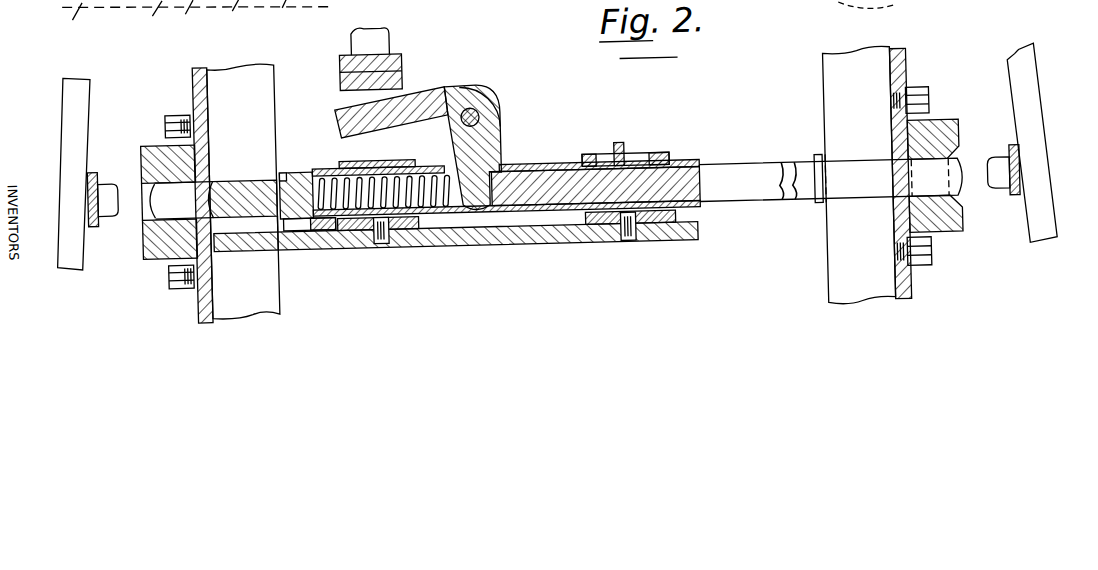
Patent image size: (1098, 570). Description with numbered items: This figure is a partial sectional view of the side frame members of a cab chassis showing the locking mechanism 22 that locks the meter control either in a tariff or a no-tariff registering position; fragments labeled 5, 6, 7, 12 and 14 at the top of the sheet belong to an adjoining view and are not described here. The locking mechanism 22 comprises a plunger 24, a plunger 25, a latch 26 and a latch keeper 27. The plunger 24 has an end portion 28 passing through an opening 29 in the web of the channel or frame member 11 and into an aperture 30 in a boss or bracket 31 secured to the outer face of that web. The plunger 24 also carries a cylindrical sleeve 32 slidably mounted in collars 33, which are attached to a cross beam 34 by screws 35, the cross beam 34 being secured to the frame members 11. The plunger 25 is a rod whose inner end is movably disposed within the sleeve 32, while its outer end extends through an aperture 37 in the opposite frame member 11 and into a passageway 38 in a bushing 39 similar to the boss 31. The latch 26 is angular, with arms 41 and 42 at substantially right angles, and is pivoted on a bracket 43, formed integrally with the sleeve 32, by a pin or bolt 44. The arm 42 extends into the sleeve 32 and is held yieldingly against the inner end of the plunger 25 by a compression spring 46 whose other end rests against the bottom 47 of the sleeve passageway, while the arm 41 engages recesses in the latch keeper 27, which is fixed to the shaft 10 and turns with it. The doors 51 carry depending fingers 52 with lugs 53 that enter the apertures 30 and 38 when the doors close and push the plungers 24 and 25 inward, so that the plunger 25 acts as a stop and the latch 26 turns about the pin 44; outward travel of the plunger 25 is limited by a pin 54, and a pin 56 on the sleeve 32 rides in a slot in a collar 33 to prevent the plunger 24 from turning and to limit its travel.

The channel or frame member 11 is at (246, 115).
The locking mechanism 22 is at (556, 95).
The plunger 24 is at (281, 174).
The plunger 25 is at (745, 178).
The latch 26 is at (455, 92).
The latch keeper 27 is at (355, 50).
The end portion 28 is at (234, 184).
The opening 29 is at (210, 181).
The aperture 30 is at (148, 221).
The boss or bracket 31 is at (168, 259).
The cylindrical sleeve 32 is at (553, 171).
The collar 33 is at (388, 170).
The cross beam 34 is at (500, 254).
The screw 35 is at (372, 249).
The opening or aperture 37 is at (890, 177).
The aperture or passageway 38 is at (962, 210).
The bushing 39 is at (942, 138).
The arm 41 is at (340, 126).
The arm 42 is at (484, 170).
The bracket 43 is at (503, 120).
The pin or bolt 44 is at (474, 116).
The compression spring 46 is at (334, 181).
The bottom 47 is at (297, 234).
The door 51 is at (90, 116).
The finger or depending arm 52 is at (95, 170).
The lug or boss 53 is at (108, 215).
The pin 54 is at (816, 170).
The pin 56 is at (620, 152).
The fig.1 remnant 5 is at (69, 32).
The fig.1 remnant 6 is at (385, 2).
The fig.1 remnant 7 is at (25, 12).
The shaft 10 is at (244, 20).
The fig.1 remnant 12 is at (189, 26).
The fig.1 remnant 14 is at (139, 33).